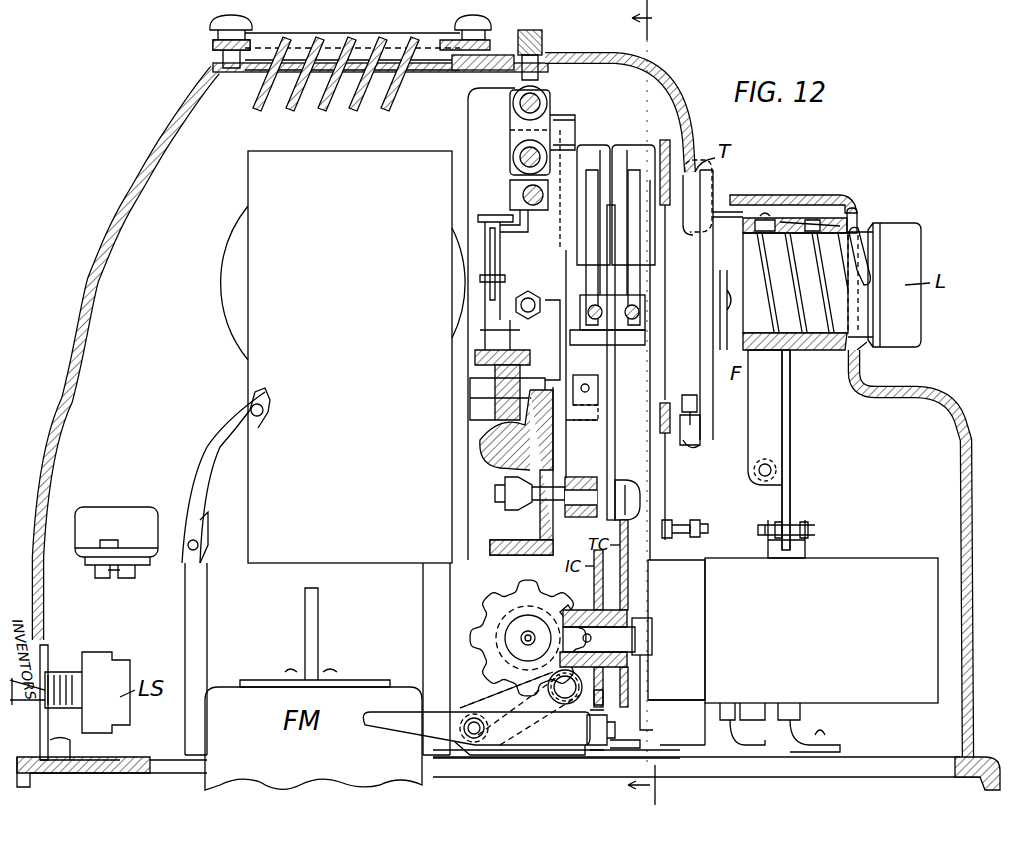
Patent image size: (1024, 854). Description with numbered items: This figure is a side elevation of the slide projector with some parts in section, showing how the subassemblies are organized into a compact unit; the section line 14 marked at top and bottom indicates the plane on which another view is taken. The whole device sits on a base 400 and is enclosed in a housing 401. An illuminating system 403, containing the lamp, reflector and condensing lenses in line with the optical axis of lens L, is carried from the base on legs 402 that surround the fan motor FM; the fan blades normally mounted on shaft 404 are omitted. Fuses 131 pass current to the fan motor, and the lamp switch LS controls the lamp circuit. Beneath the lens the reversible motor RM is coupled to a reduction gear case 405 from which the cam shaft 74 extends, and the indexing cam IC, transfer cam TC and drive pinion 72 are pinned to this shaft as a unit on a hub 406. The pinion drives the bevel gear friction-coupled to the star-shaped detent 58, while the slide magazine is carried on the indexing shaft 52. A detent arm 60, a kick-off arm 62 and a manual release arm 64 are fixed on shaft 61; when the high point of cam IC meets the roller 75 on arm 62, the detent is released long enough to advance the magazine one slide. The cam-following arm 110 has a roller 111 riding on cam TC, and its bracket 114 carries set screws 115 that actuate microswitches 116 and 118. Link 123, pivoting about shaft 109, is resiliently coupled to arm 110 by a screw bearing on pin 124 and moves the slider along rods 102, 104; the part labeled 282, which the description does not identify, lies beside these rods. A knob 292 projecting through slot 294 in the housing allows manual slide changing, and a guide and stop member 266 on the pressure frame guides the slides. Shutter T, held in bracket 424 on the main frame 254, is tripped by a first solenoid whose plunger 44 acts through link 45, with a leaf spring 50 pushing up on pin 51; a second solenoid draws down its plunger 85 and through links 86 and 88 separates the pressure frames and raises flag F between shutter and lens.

The section line 14 is at (654, 402).
The plunger 44 is at (690, 522).
The link 45 is at (668, 522).
The leaf spring 50 is at (688, 428).
The pin 51 is at (690, 407).
The indexing shaft 52 is at (488, 460).
The detent 58 is at (530, 583).
The detent arm 60 is at (525, 722).
The shaft 61 is at (477, 740).
The kick-off arm 62 is at (530, 745).
The manual release arm 64 is at (400, 718).
The pinion 72 is at (568, 610).
The cam shaft 74 is at (630, 615).
The roller 75 is at (600, 745).
The plunger 85 is at (808, 550).
The link 86 is at (790, 495).
The link 88 is at (770, 422).
The rod 102 is at (520, 105).
The rod 104 is at (520, 158).
The shaft 109 is at (582, 515).
The cam-following arm 110 is at (612, 450).
The roller 111 is at (622, 482).
The bracket 114 is at (608, 322).
The set screws 115 is at (600, 305).
The microswitch 116 is at (630, 150).
The microswitch 118 is at (594, 150).
The link 123 is at (570, 378).
The pin 124 is at (582, 425).
The fuses 131 is at (102, 512).
The main frame 254 is at (540, 540).
The guide and stop member 266 is at (500, 210).
The block 282 is at (548, 112).
The knob 292 is at (545, 40).
The slot 294 is at (565, 56).
The base 400 is at (885, 768).
The housing 401 is at (975, 712).
The legs 402 is at (207, 612).
The illuminating system 403 is at (262, 380).
The shaft 404 is at (305, 638).
The reduction gear case 405 is at (698, 652).
The hub 406 is at (628, 660).
The bracket 424 is at (662, 415).